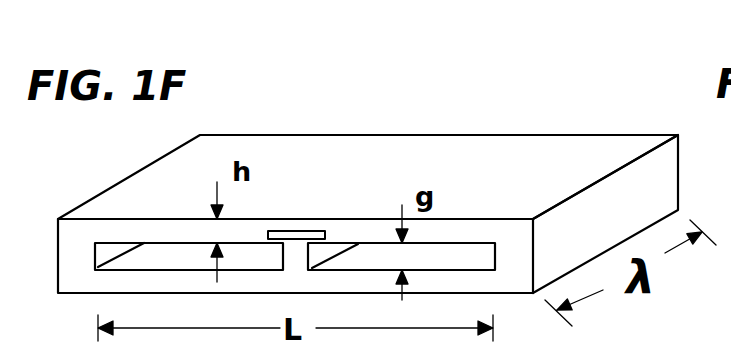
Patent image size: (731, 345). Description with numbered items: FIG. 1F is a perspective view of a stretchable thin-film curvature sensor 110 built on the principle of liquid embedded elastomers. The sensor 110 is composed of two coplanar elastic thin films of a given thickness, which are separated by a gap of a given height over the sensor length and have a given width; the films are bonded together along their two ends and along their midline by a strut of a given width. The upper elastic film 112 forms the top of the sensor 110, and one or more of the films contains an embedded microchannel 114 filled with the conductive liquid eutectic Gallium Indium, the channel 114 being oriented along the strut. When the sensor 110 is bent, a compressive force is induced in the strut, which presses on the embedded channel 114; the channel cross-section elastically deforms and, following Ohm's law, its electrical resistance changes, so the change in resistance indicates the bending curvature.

The waveguide antenna device 110 is at (368, 162).
The top surface of dielectric body 112 is at (477, 175).
The feed element 114 is at (289, 228).